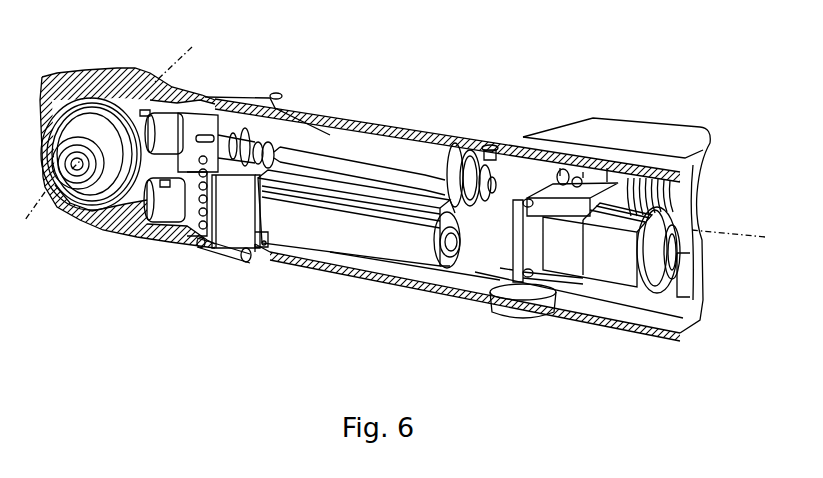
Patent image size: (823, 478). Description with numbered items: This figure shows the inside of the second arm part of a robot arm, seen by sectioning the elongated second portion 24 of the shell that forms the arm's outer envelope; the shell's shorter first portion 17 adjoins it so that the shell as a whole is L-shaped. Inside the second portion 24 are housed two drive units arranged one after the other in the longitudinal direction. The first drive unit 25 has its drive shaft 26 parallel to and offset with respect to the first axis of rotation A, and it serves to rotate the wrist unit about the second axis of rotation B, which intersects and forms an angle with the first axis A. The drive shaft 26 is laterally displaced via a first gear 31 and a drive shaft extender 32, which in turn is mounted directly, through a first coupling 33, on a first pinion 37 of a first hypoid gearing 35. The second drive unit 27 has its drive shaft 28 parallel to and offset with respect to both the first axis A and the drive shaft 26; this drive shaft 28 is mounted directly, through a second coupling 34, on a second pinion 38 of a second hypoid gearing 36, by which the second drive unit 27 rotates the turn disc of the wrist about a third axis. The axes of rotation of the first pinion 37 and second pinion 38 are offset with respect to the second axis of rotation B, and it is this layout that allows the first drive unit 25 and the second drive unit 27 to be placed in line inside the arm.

The first portion 17 is at (645, 137).
The second portion 24 is at (410, 133).
The first drive unit 25 is at (612, 265).
The drive shaft 26 is at (508, 190).
The second drive unit 27 is at (325, 230).
The drive shaft 28 is at (202, 203).
The first gear 31 is at (454, 165).
The drive shaft extender 32 is at (368, 168).
The first coupling 33 is at (195, 120).
The second coupling 34 is at (185, 208).
The first hypoid gearing 35 is at (195, 123).
The second hypoid gearing 36 is at (163, 193).
The first pinion 37 is at (163, 127).
The second pinion 38 is at (92, 226).
The first axis of rotation A is at (737, 242).
The second axis of rotation B is at (117, 121).